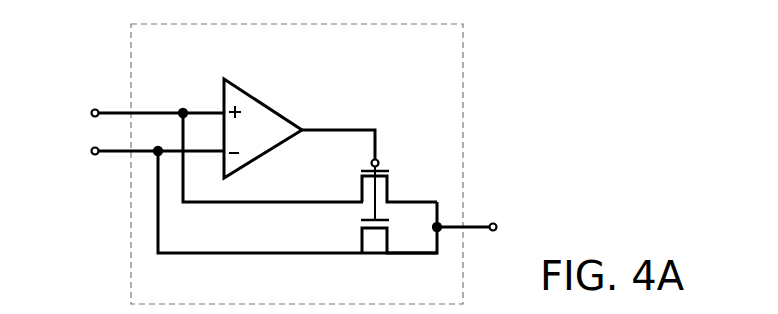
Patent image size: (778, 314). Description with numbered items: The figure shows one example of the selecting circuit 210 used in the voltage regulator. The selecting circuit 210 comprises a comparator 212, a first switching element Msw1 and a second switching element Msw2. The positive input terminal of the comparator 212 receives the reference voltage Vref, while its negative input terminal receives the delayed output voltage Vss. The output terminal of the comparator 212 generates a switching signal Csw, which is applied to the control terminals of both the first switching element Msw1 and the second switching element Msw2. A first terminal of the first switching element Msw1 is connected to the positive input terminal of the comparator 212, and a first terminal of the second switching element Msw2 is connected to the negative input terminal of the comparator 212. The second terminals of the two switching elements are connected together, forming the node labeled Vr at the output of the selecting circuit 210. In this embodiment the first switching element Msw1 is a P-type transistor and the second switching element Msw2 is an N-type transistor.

The selecting circuit 210 is at (456, 61).
The comparator 212 is at (248, 90).
The reference voltage Vref is at (200, 141).
The delayed output voltage Vss is at (242, 200).
The switching signal Csw is at (338, 131).
The first switching element Msw1 is at (362, 181).
The second switching element Msw2 is at (393, 240).
The output reference voltage Vr is at (481, 227).